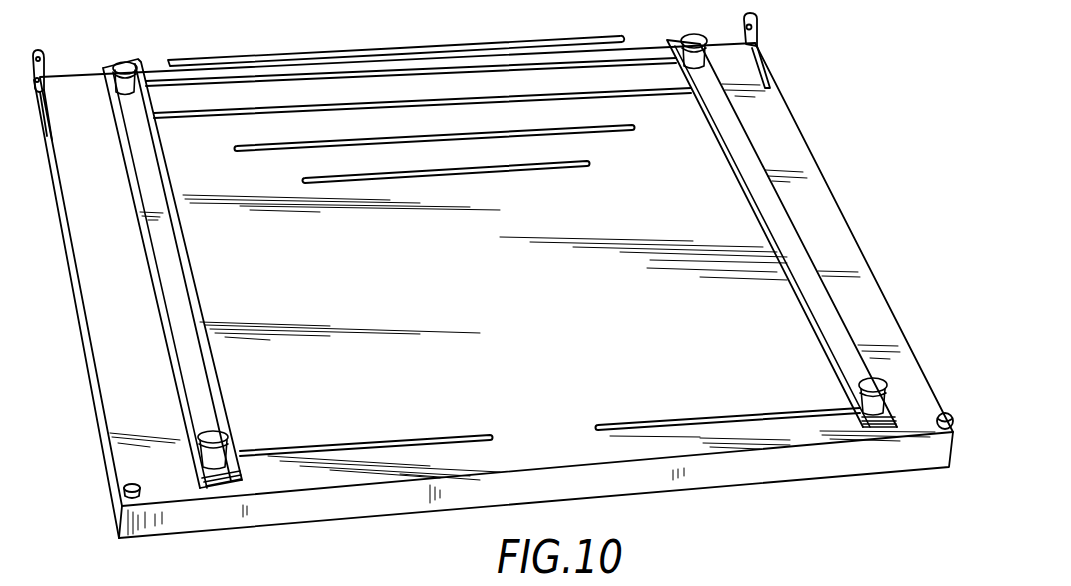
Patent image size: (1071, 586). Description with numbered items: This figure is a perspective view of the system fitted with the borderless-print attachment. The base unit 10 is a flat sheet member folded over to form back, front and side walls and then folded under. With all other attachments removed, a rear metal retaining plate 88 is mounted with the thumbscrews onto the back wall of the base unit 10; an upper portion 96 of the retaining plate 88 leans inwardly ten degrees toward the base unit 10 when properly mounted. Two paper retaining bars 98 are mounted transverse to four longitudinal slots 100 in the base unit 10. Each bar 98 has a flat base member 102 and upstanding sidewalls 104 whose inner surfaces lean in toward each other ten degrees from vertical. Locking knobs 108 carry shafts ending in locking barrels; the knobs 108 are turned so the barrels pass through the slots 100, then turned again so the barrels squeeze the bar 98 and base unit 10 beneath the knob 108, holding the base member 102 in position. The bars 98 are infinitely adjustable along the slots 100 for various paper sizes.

The base unit 10 is at (830, 188).
The rear metal retaining plate 88 is at (323, 35).
The upper portion 96 is at (500, 27).
The paper retaining bars 98 is at (166, 322).
The longitudinal slots 100 is at (470, 74).
The flat base members 102 is at (163, 253).
The upstanding sidewalls 104 is at (243, 481).
The locking knobs 108 is at (132, 50).